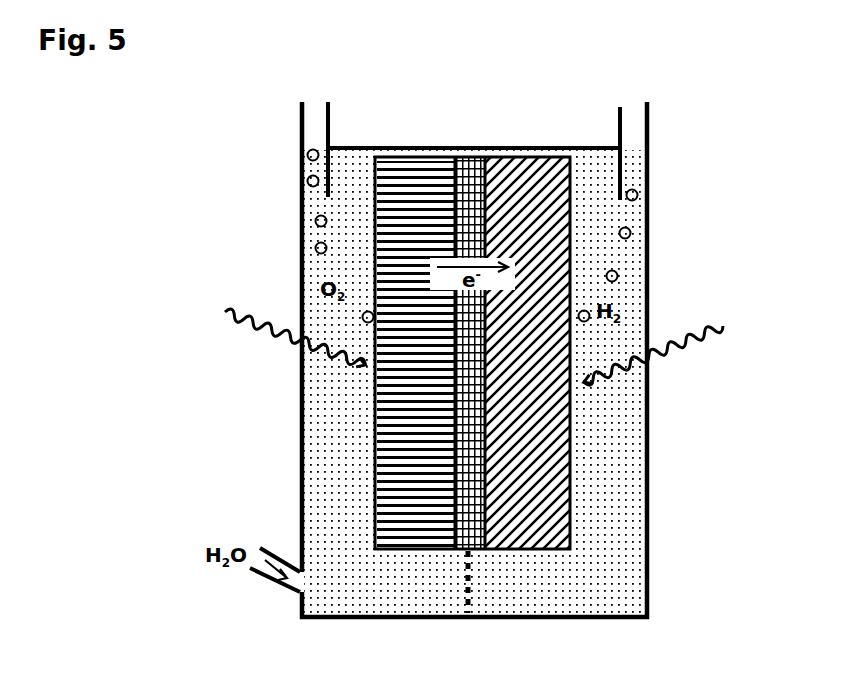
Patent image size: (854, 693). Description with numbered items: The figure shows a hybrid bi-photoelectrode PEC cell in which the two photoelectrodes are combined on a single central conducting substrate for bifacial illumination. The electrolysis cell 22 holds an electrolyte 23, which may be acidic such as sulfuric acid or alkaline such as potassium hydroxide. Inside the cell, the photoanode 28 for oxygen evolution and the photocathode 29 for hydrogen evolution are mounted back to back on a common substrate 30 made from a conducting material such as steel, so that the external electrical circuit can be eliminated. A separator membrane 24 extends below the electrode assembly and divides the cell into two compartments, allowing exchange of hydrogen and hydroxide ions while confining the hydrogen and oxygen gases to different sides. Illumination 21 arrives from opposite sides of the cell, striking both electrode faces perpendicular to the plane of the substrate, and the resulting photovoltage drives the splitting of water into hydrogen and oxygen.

The illumination 21 is at (675, 338).
The electrolysis cell 22 is at (650, 232).
The electrolyte 23 is at (605, 466).
The separator membrane 24 is at (468, 610).
The photoanode 28 is at (400, 418).
The photocathode 29 is at (540, 540).
The common substrate 30 is at (462, 455).